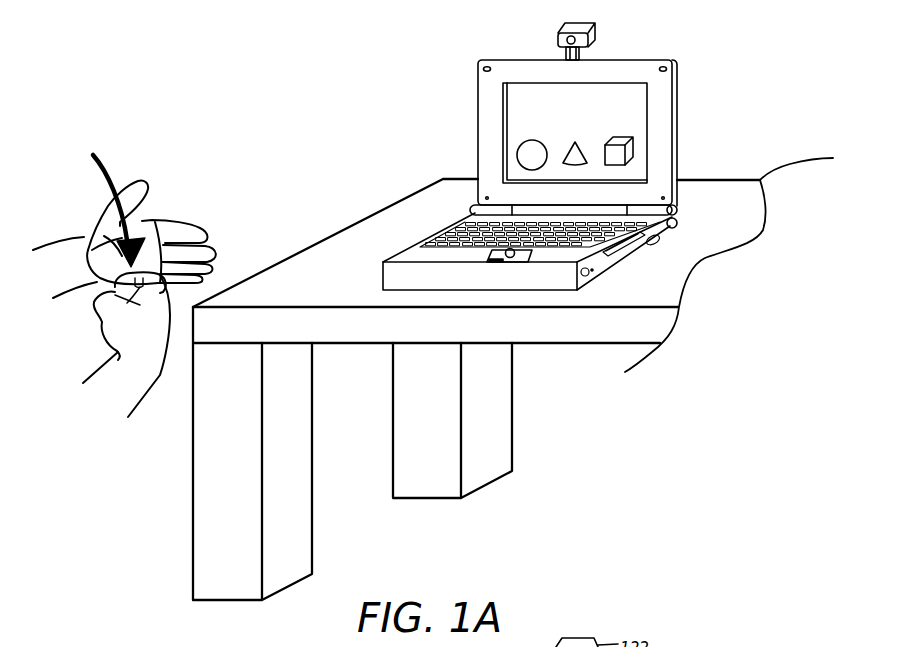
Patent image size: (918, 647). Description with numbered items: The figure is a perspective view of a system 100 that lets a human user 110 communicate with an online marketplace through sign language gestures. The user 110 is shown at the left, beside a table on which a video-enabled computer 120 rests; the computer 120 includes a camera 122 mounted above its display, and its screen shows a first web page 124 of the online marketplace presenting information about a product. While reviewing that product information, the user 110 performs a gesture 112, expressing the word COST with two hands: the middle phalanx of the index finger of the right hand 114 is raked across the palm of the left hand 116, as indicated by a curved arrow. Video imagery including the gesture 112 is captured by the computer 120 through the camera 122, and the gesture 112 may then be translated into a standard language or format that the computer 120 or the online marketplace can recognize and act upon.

The system 100 is at (283, 152).
The user 110 is at (124, 244).
The gesture 112 is at (120, 167).
The right hand 114 is at (100, 367).
The left hand 116 is at (102, 205).
The computer 120 is at (568, 156).
The camera 122 is at (593, 28).
The first web page 124 is at (517, 116).